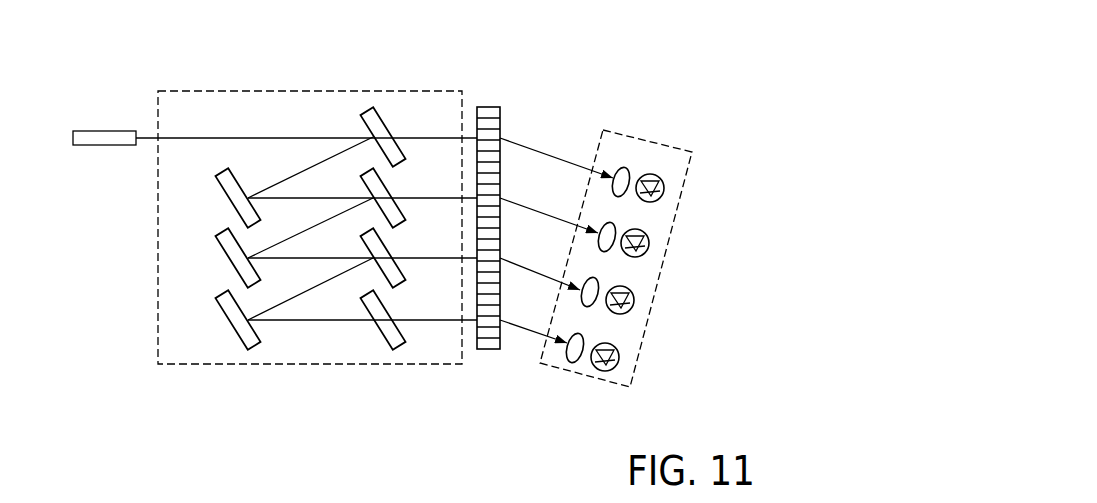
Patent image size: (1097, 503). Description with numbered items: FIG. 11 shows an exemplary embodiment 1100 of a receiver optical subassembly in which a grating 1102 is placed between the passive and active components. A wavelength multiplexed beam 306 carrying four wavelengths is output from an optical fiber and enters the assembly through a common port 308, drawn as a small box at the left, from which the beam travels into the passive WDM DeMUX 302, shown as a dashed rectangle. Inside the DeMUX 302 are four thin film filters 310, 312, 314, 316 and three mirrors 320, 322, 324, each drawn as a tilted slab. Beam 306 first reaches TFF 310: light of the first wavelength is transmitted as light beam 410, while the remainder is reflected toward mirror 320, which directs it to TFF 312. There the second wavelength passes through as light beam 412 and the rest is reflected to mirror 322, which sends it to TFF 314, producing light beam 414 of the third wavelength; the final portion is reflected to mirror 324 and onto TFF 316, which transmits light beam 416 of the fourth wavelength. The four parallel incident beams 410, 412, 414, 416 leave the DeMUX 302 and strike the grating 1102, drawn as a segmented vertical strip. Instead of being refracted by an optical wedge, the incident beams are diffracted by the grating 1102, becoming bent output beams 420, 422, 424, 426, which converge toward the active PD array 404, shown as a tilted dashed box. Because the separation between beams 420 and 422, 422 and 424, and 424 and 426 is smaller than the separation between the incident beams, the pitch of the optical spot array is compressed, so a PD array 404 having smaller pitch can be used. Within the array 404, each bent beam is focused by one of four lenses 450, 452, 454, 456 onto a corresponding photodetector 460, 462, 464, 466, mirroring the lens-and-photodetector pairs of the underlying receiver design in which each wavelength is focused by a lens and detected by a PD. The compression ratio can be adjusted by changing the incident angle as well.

The exemplary embodiment 1100 is at (209, 36).
The passive WDM DeMUX 302 is at (275, 91).
The common port 308 is at (90, 126).
The wavelength multiplexed beam 306 is at (198, 137).
The TFF 310 is at (363, 118).
The TFF 312 is at (363, 179).
The TFF 314 is at (363, 239).
The TFF 316 is at (363, 301).
The mirror 320 is at (220, 188).
The mirror 322 is at (222, 251).
The mirror 324 is at (222, 308).
The light beam 410 is at (405, 132).
The light beam 412 is at (405, 193).
The light beam 414 is at (405, 255).
The light beam 416 is at (405, 316).
The grating 1102 is at (500, 120).
The light beam 420 is at (541, 152).
The light beam 422 is at (526, 210).
The light beam 424 is at (516, 267).
The light beam 426 is at (512, 326).
The active PD array 404 is at (668, 142).
The first lens 450 is at (614, 168).
The second lens 452 is at (600, 224).
The third lens 454 is at (584, 279).
The fourth lens 456 is at (568, 337).
The first photodetector 460 is at (664, 192).
The second photodetector 462 is at (649, 247).
The third photodetector 464 is at (634, 304).
The fourth photodetector 466 is at (619, 361).